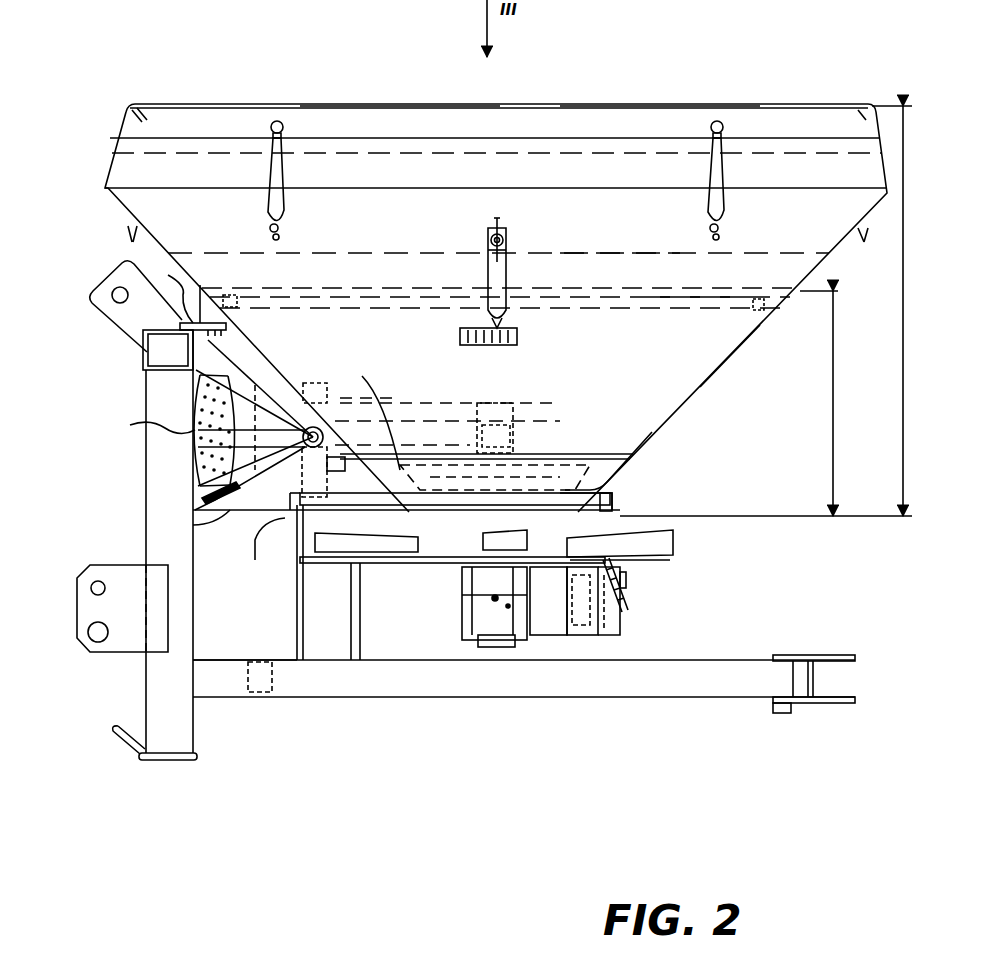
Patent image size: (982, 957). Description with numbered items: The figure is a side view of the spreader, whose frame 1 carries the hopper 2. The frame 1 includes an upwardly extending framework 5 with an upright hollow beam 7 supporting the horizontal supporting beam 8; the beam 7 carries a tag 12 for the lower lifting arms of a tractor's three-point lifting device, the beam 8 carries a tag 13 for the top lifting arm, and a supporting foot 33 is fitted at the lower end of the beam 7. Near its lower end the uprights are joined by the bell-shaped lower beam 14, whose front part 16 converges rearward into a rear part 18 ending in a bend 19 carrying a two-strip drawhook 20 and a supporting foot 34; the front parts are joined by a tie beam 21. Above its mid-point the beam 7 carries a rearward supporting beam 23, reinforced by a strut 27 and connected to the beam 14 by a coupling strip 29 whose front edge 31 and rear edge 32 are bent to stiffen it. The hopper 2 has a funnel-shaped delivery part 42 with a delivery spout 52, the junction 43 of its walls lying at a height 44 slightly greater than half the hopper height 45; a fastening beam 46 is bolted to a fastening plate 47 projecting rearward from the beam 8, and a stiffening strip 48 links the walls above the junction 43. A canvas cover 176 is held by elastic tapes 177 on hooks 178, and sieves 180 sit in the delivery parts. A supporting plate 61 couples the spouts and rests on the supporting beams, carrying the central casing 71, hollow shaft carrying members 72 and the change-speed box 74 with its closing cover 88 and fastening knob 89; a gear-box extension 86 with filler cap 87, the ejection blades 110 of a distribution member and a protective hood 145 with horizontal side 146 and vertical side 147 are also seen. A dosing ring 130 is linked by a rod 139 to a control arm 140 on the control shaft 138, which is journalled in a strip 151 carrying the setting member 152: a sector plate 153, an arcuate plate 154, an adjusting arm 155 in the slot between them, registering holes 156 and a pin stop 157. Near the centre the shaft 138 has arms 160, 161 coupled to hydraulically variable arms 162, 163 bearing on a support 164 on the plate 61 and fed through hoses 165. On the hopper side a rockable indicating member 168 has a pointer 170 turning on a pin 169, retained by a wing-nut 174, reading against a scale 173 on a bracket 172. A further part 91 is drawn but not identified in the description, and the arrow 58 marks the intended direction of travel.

The frame 1 is at (135, 708).
The hopper 2 is at (165, 200).
The framework 5 is at (145, 450).
The upright hollow beam 7 is at (150, 686).
The horizontal supporting beam 8 is at (145, 360).
The tags 12 is at (80, 612).
The tags 13 is at (110, 310).
The lower beam 14 is at (325, 705).
The front part 16 is at (240, 690).
The rear part 18 is at (625, 700).
The bend 19 is at (793, 660).
The drawhook 20 is at (835, 655).
The tie beam 21 is at (260, 660).
The supporting beam 23 is at (485, 642).
The strut 27 is at (240, 352).
The coupling strip 29 is at (345, 640).
The front edges 31 is at (297, 580).
The rear edges 32 is at (362, 603).
The supporting feet 33 is at (128, 748).
The supporting foot 34 is at (780, 714).
The funnel-shaped delivery part 42 is at (710, 370).
The junction 43 is at (616, 275).
The height 44 is at (830, 422).
The height 45 is at (900, 345).
The fastening beam 46 is at (217, 303).
The fastening plate 47 is at (175, 300).
The stiffening strip 48 is at (437, 170).
The delivery spout 52 is at (602, 468).
The intended direction of operative travel 58 is at (30, 527).
The supporting plate 61 is at (562, 455).
The central casing 71 is at (545, 637).
The hollow shaft carrying members 72 is at (582, 640).
The change-speed box 74 is at (612, 625).
The extensions 86 is at (505, 610).
The filler caps 87 is at (490, 600).
The closing cover 88 is at (620, 607).
The fastening knobs 89 is at (628, 580).
The block 91 is at (462, 568).
The ejection blades 110 is at (660, 540).
The dosing member 130 is at (612, 492).
The control shaft 138 is at (368, 398).
The rod 139 is at (276, 539).
The control arm 140 is at (227, 534).
The protective hoods 145 is at (333, 563).
The horizontal side 146 is at (612, 505).
The vertical side 147 is at (397, 528).
The strip 151 is at (304, 382).
The setting member 152 is at (188, 410).
The plate 153 is at (215, 485).
The arcuate plate 154 is at (198, 470).
The adjusting arm 155 is at (215, 515).
The registering holes 156 is at (198, 445).
The stop 157 is at (130, 425).
The arm 160 is at (337, 365).
The arm 161 is at (345, 480).
The hydraulically controllable arm 162 is at (415, 402).
The hydraulically controllable arm 163 is at (472, 402).
The support 164 is at (530, 412).
The hoses 165 is at (527, 390).
The rockable indicating member 168 is at (482, 243).
The pin 169 is at (506, 234).
The pointer 170 is at (500, 282).
The bracket 172 is at (519, 338).
The scale 173 is at (462, 338).
The wing-nut 174 is at (500, 224).
The canvas cover 176 is at (632, 118).
The elastic tapes 177 is at (270, 172).
The hooks 178 is at (285, 236).
The sieves 180 is at (720, 280).